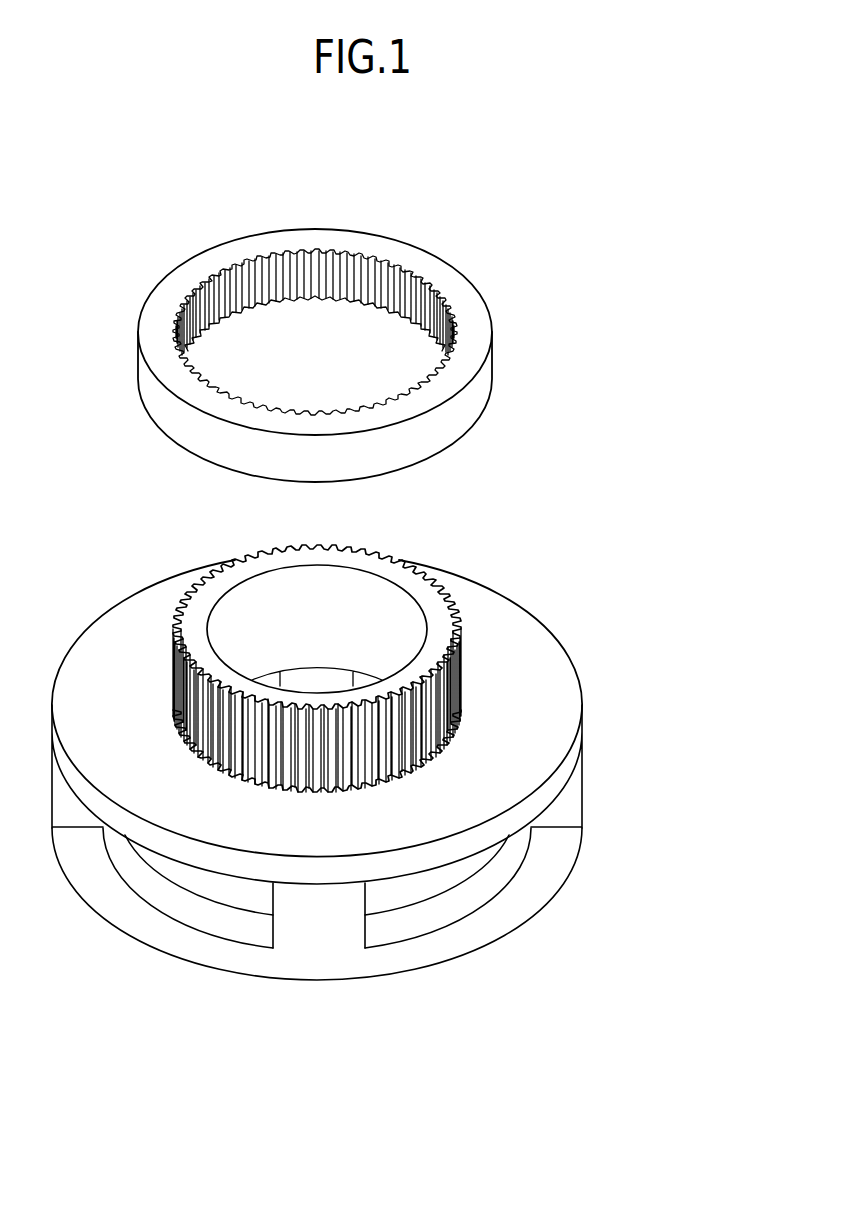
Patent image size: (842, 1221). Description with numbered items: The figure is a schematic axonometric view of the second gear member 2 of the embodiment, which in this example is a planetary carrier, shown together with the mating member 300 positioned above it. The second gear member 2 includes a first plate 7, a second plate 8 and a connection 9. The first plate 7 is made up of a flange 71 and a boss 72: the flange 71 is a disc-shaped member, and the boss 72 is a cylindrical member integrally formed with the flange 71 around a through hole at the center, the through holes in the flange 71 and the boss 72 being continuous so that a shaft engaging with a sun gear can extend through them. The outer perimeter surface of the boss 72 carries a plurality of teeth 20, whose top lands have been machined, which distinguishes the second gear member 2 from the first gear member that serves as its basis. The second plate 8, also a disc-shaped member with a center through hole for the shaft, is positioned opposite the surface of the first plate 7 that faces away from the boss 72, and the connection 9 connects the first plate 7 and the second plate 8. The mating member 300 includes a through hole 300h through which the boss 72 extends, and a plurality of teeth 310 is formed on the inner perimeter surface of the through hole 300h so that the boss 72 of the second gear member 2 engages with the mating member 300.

The mating member 300 is at (365, 334).
The through hole 300h is at (332, 250).
The teeth 310 is at (373, 260).
The second gear member 2 is at (347, 743).
The teeth 20 is at (432, 585).
The first plate 7 is at (347, 718).
The flange 71 is at (528, 657).
The boss 72 is at (443, 597).
The second plate 8 is at (502, 887).
The connection 9 is at (300, 930).